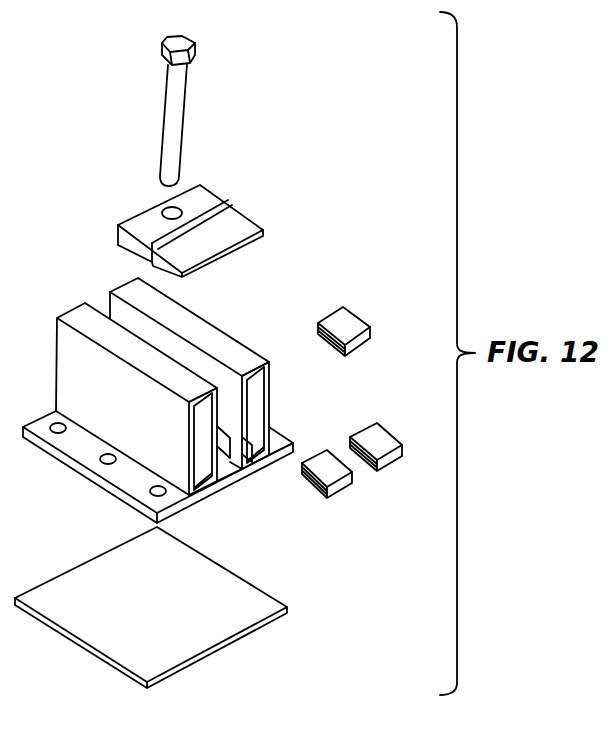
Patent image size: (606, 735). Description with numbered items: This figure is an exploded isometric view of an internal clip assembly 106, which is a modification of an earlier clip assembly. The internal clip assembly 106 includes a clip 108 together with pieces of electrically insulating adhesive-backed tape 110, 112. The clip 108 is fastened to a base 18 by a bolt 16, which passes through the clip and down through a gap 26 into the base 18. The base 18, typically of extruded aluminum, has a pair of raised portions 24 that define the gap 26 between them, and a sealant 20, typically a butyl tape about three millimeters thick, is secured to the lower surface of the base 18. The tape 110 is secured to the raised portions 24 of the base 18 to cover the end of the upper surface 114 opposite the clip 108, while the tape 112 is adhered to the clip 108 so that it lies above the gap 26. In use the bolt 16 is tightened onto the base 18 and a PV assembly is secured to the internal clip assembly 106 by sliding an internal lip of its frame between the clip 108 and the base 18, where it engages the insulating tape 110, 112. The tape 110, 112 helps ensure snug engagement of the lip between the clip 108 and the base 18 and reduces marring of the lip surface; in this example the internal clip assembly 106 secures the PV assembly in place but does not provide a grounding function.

The bolt 16 is at (182, 40).
The base 18 is at (272, 432).
The sealant 20 is at (260, 590).
The raised portions 24 is at (198, 317).
The gap 26 is at (110, 310).
The internal clip assembly 106 is at (325, 92).
The clip 108 is at (232, 252).
The electrically insulating adhesive-backed tape 110 is at (390, 453).
The electrically insulating adhesive-backed tape 112 is at (362, 335).
The upper surface 114 is at (228, 350).